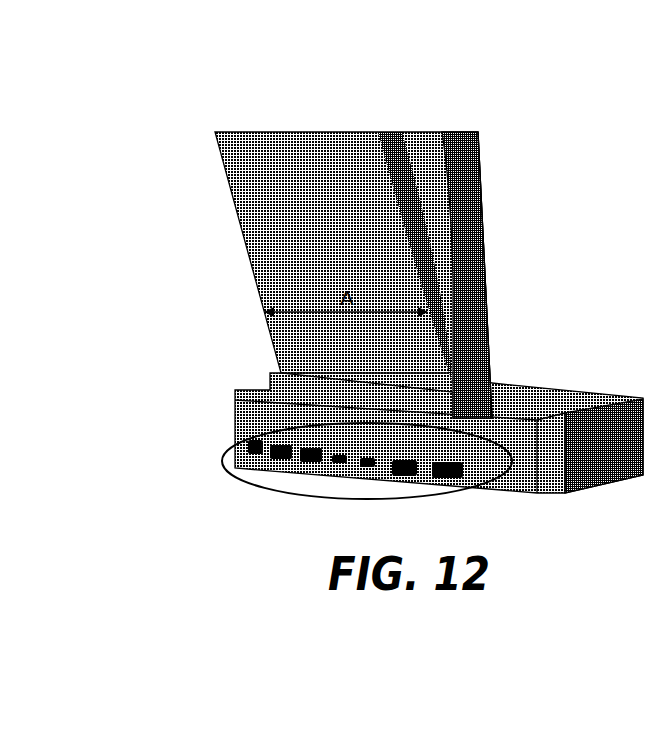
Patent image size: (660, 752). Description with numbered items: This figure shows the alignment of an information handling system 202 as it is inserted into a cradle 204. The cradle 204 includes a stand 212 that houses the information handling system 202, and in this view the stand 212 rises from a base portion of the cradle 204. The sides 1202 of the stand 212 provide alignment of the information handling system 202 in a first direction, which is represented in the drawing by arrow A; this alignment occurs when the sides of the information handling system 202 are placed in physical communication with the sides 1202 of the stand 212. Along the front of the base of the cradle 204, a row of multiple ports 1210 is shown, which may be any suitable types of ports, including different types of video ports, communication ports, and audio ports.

The information handling system 202 is at (257, 256).
The stand 212 is at (481, 222).
The sides of stand 1202 is at (476, 330).
The cradle 204 is at (581, 348).
The ports 1210 is at (278, 492).